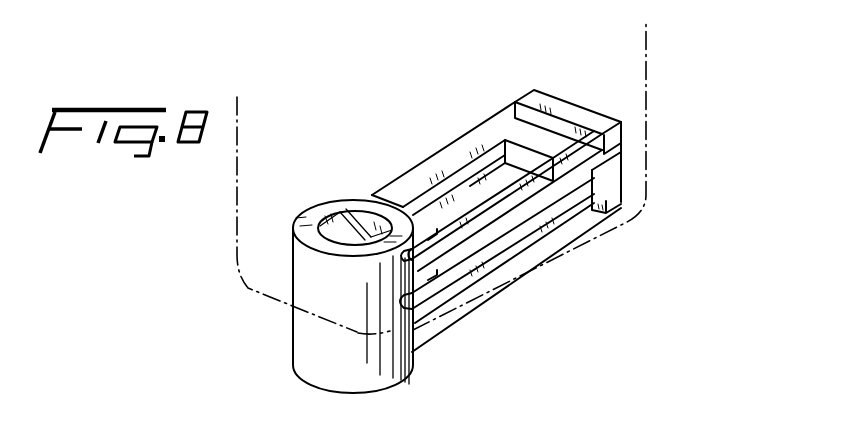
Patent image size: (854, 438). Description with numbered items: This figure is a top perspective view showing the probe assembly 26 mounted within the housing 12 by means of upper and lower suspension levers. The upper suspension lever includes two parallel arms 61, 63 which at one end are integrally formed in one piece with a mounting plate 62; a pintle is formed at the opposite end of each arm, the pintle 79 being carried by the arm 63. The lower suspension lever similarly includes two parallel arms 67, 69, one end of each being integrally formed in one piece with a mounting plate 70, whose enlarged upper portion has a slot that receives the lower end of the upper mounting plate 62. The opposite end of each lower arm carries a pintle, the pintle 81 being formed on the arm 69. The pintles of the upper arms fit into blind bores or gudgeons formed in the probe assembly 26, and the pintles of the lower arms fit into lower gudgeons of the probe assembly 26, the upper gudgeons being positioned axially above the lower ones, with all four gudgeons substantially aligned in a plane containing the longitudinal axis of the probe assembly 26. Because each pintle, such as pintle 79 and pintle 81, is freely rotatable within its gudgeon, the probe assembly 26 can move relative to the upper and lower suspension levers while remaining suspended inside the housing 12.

The housing 12 is at (647, 73).
The probe assembly 26 is at (418, 351).
The arm 61 is at (415, 183).
The mounting plate 62 is at (567, 107).
The arm 63 is at (490, 207).
The arm 67 is at (446, 208).
The arm 69 is at (528, 218).
The mounting plate 70 is at (616, 197).
The pintle 79 is at (398, 262).
The pintle 81 is at (400, 303).